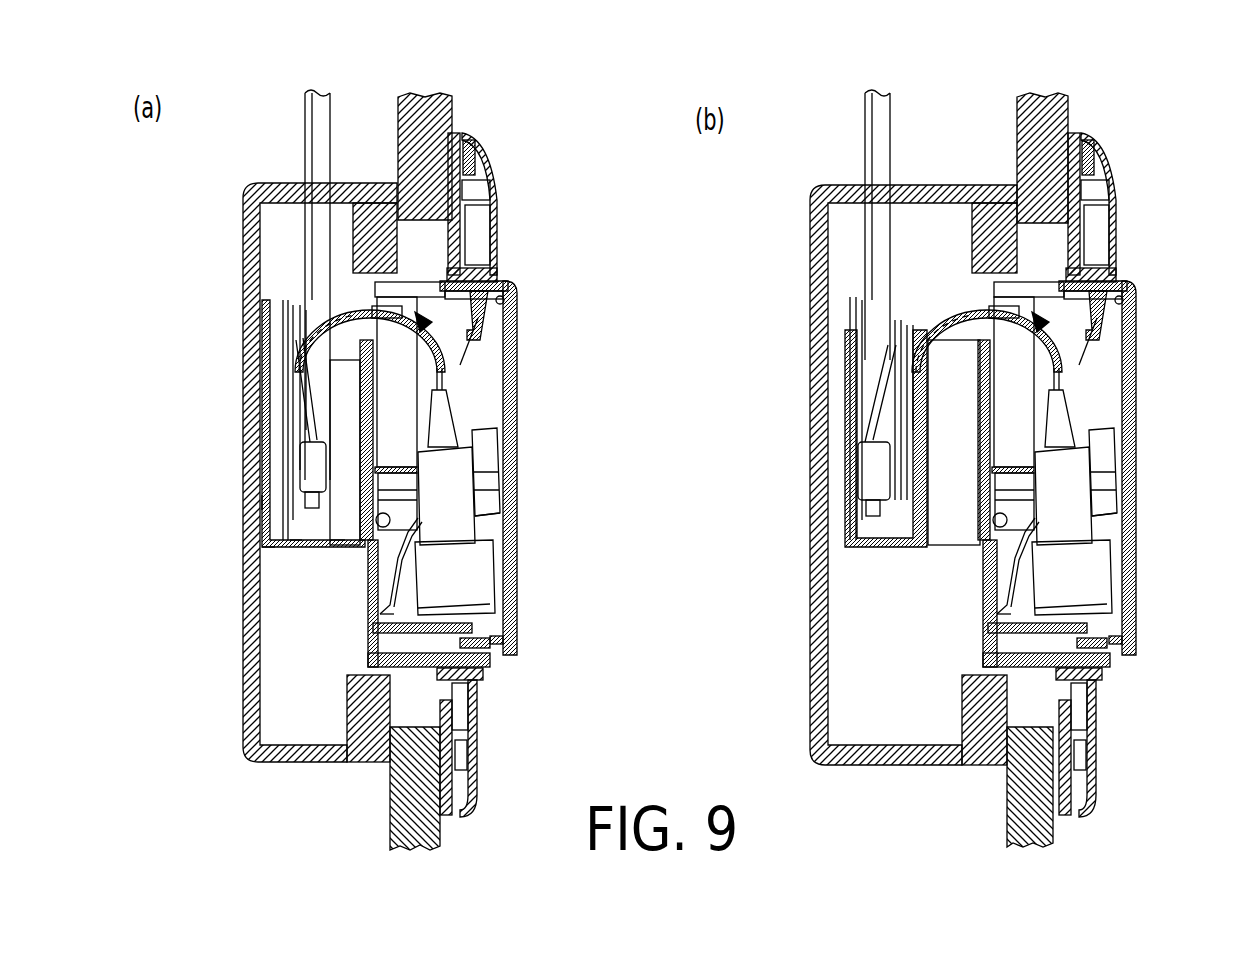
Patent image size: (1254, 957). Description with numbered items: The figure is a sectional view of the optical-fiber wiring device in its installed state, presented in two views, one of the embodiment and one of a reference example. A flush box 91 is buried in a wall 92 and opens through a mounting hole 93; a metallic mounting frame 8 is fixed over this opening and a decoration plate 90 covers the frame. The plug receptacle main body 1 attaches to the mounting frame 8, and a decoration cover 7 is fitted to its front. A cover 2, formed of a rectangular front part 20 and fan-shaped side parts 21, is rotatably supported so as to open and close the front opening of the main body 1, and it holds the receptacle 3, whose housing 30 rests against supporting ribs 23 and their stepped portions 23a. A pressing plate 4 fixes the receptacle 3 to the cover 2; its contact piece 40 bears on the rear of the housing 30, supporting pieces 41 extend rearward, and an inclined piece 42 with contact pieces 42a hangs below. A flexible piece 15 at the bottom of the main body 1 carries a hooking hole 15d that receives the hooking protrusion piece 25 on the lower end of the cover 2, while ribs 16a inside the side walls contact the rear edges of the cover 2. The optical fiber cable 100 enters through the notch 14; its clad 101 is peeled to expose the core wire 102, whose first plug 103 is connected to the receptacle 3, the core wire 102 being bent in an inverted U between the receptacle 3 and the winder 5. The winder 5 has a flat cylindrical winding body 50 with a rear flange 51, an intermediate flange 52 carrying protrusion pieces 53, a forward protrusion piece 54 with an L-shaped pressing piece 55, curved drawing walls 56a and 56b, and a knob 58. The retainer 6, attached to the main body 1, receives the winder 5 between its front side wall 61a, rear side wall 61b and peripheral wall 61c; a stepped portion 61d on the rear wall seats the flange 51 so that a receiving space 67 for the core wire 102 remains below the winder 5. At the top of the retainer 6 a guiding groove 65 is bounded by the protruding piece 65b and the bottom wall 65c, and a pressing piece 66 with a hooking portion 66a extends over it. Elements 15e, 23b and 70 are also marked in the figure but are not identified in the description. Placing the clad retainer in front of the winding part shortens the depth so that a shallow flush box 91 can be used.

The plug receptacle main body 1 is at (403, 710).
The cover 2 is at (520, 541).
The receptacle for optical fiber 3 is at (462, 580).
The pressing plate 4 is at (398, 586).
The winder 5 is at (275, 352).
The retainer 6 is at (262, 418).
The decoration cover 7 is at (500, 243).
The mounting frame 8 is at (487, 136).
The notch 14 is at (397, 283).
The flexible piece 15 is at (410, 635).
The hooking hole 15d is at (497, 637).
The projection 15e is at (503, 666).
The ribs 16a is at (460, 366).
The front part 20 is at (500, 492).
The side parts 21 is at (490, 378).
The supporting ribs 23 is at (483, 448).
The stepped portion 23a is at (497, 527).
The lower end portion 23b is at (500, 608).
The hooking protrusion piece 25 is at (513, 640).
The housing 30 is at (480, 587).
The contact piece 40 is at (400, 530).
The supporting pieces 41 is at (397, 510).
The inclined piece 42 is at (505, 572).
The contact pieces 42a is at (392, 600).
The winding body 50 is at (278, 392).
The flange 51 is at (278, 330).
The flange 52 is at (308, 480).
The protrusion pieces 53 is at (290, 472).
The protrusion piece 54 is at (318, 343).
The pressing piece 55 is at (355, 310).
The drawing wall 56a is at (385, 320).
The drawing wall 56b is at (338, 325).
The knob 58 is at (325, 385).
The front side wall 61a is at (320, 549).
The rear side wall 61b is at (268, 395).
The peripheral wall 61c is at (263, 546).
The stepped portion 61d is at (262, 498).
The guiding groove 65 is at (493, 268).
The protruding piece 65b is at (380, 405).
The bottom wall 65c is at (492, 300).
The pressing piece 66 is at (470, 286).
The hooking portion 66a is at (515, 300).
The receiving space 67 is at (295, 549).
The lower cover 70 is at (483, 700).
The decoration plate 90 is at (497, 168).
The flush box 91 is at (257, 190).
The wall 92 is at (407, 797).
The mounting hole 93 is at (268, 643).
The optical fiber cable 100 is at (320, 126).
The clad 101 is at (325, 165).
The core wire 102 is at (297, 432).
The first plug 103 is at (450, 428).